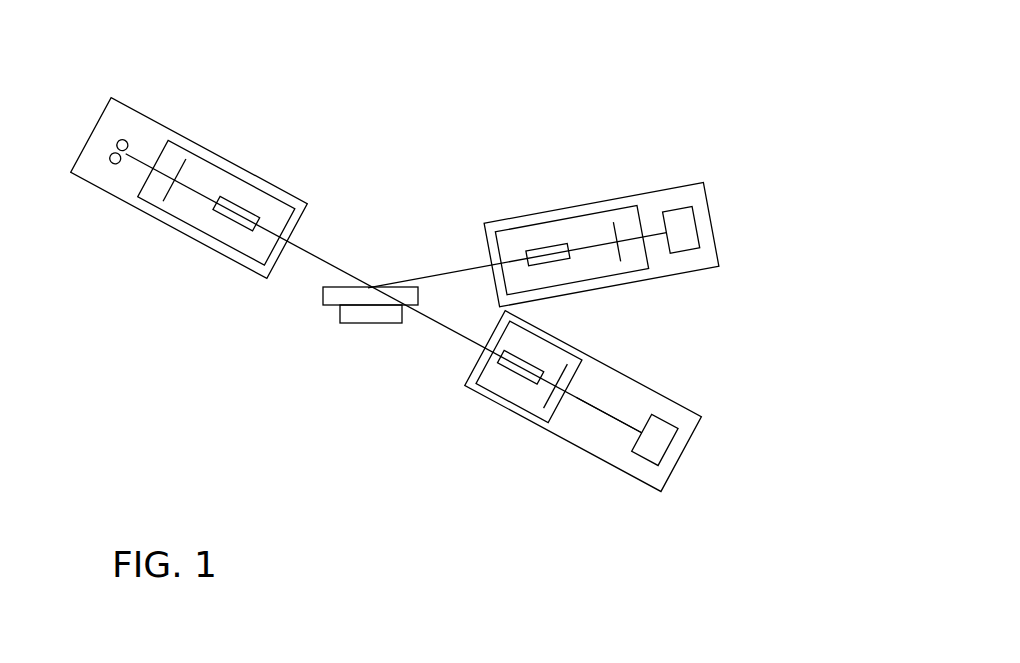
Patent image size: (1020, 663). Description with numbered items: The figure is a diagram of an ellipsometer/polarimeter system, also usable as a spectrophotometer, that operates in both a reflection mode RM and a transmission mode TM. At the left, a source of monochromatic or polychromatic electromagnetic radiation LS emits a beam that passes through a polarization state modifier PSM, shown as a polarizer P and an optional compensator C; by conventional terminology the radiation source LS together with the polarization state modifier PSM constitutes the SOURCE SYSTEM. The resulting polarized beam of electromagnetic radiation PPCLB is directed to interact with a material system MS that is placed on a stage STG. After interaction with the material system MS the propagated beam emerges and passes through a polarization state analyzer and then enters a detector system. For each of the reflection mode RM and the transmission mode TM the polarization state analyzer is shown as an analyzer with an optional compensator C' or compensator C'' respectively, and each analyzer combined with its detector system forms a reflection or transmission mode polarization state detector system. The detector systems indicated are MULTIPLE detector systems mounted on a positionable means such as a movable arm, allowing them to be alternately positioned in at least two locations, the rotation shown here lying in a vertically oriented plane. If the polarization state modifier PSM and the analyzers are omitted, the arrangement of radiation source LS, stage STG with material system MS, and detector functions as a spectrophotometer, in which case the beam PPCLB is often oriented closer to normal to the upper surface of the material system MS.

The source system SOURCE SYSTEM is at (337, 223).
The source of monochromatic or polychromatic electromagnetic radiation LS is at (123, 137).
The polarization state modifier PSM is at (164, 244).
The polarizer P is at (174, 175).
The compensator C is at (236, 221).
The polarized beam of electromagnetic radiation PPCLB is at (204, 186).
The material system MS is at (322, 297).
The stage STG is at (375, 327).
The reflection mode RM is at (621, 171).
The transmission mode TM is at (575, 484).
The compensator C' is at (548, 265).
The compensator C'' is at (517, 376).
The multiple (detector elements) MULTIPLE is at (670, 662).